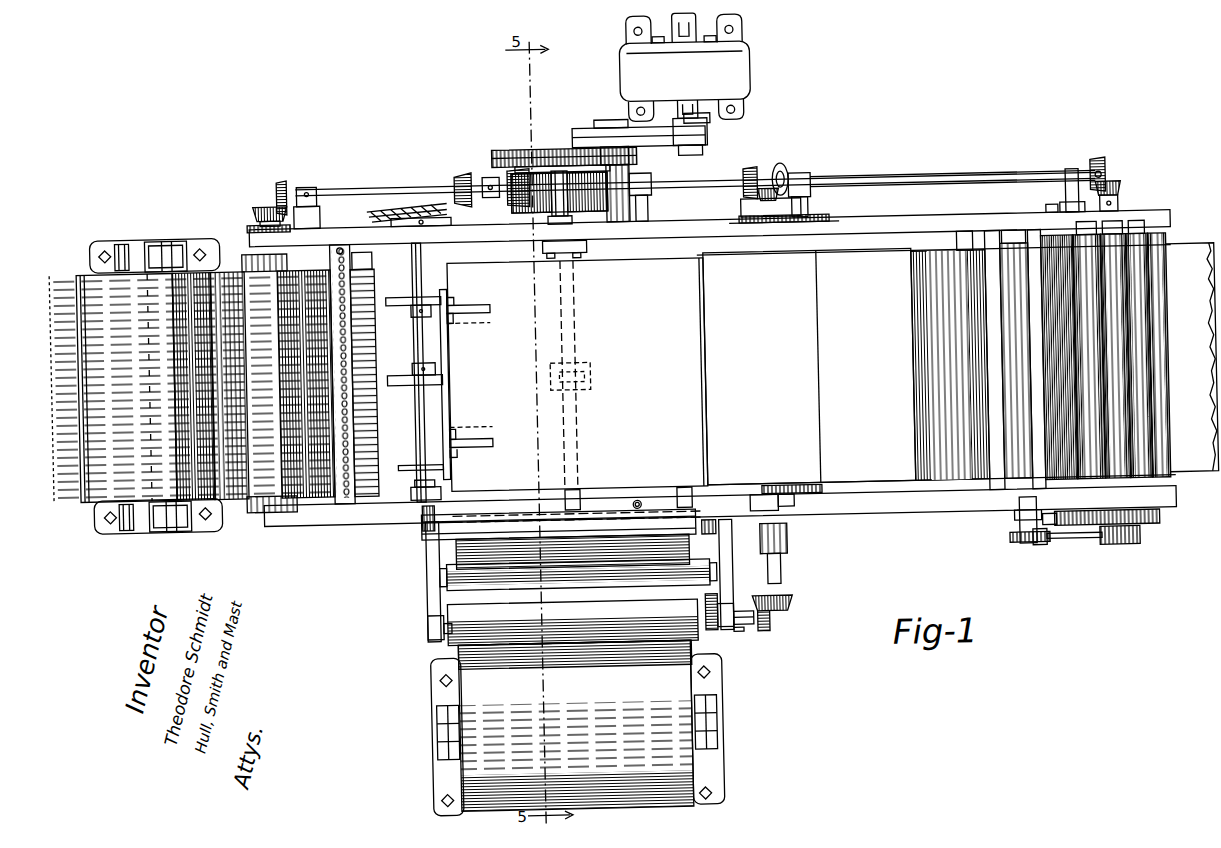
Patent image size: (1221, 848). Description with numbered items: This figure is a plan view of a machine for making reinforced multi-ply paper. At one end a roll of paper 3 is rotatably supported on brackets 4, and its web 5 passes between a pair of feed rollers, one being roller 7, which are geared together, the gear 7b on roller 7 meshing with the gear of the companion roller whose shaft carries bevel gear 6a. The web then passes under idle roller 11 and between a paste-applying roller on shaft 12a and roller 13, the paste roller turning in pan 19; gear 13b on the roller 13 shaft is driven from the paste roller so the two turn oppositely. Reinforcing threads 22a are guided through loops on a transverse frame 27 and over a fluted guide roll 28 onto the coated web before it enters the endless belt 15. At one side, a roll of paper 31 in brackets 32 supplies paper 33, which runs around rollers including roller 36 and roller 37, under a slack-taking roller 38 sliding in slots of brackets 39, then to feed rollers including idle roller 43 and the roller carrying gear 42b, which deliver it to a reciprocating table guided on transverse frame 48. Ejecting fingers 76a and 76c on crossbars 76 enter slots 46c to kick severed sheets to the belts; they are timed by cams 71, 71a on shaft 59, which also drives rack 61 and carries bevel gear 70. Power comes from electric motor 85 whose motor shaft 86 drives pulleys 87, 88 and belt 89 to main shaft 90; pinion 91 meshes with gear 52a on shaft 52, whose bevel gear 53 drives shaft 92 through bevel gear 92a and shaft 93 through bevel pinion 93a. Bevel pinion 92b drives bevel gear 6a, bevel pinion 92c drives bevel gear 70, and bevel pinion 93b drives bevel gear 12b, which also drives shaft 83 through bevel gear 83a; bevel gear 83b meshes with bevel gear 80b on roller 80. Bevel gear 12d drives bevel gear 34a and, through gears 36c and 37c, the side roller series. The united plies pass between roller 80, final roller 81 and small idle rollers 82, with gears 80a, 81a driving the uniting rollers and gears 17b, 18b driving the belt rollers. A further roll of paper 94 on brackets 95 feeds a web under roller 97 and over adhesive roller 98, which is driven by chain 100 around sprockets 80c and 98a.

The roll of paper 3 is at (165, 387).
The brackets 4 is at (95, 242).
The web 5 is at (238, 503).
The bevel gear 6a is at (256, 203).
The roller 7 is at (262, 503).
The gear 7b is at (252, 222).
The idle roller 11 is at (776, 512).
The shaft 12a is at (777, 572).
The bevel gear 12b is at (790, 168).
The bevel gear 12d is at (790, 606).
The roller 13 is at (770, 487).
The gear 13b is at (800, 217).
The endless belt 15 is at (608, 374).
The gear 17b is at (1058, 214).
The gear 18b is at (1050, 548).
The pan or tank 19 is at (792, 508).
The reinforcing threads 22a is at (55, 490).
The transverse frame 27 is at (338, 500).
The fluted guide roll 28 is at (362, 500).
The roll of paper 31 is at (576, 725).
The brackets 32 is at (438, 758).
The paper 33 is at (572, 612).
The bevel gear 34a is at (760, 628).
The roller 36 is at (462, 602).
The gear 36c is at (722, 630).
The roller 37 is at (430, 634).
The gear 37c is at (712, 630).
The roller 38 is at (640, 577).
The brackets 39 is at (423, 572).
The gear 42b is at (706, 534).
The idle roller 43 is at (421, 535).
The slots 46c is at (492, 304).
The transverse frame 48 is at (585, 256).
The shaft 52 is at (585, 195).
The gear 52a is at (508, 145).
The bevel gear 53 is at (552, 198).
The shaft 59 is at (415, 272).
The rack 61 is at (400, 492).
The bevel gear 70 is at (380, 206).
The cam 71 is at (400, 379).
The cam 71a is at (404, 299).
The crossbar 76 is at (449, 400).
The depending fingers 76a is at (456, 296).
The fingers 76c is at (453, 320).
The roller 80 is at (1122, 264).
The gear 80a is at (1140, 533).
The bevel gear 80b is at (1125, 196).
The sprocket 80c is at (1130, 554).
The final roller 81 is at (1150, 290).
The gear 81a is at (1160, 525).
The small idle rollers 82 is at (1085, 322).
The shaft 83 is at (926, 179).
The bevel gear 83a is at (812, 176).
The bevel gear 83b is at (1108, 170).
The electric motor 85 is at (685, 67).
The motor shaft 86 is at (716, 121).
The pulley 87 is at (708, 150).
The pulley 88 is at (688, 145).
The belt 89 is at (604, 126).
The main shaft 90 is at (636, 196).
The pinion 91 is at (636, 158).
The shaft 92 is at (368, 180).
The bevel gear 92a is at (522, 201).
The bevel pinion 92b is at (282, 178).
The bevel pinion 92c is at (466, 170).
The shaft 93 is at (756, 168).
The bevel pinion 93a is at (658, 200).
The bevel pinion 93b is at (773, 188).
The roll of paper 94 is at (890, 362).
The brackets 95 is at (881, 517).
The roller 97 is at (985, 256).
The roller 98 is at (1020, 510).
The sprocket 98a is at (1020, 550).
The chain 100 is at (1070, 547).